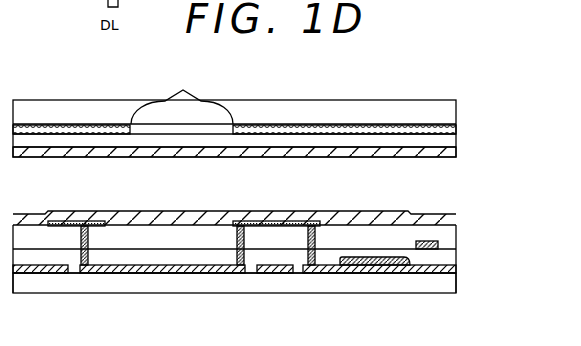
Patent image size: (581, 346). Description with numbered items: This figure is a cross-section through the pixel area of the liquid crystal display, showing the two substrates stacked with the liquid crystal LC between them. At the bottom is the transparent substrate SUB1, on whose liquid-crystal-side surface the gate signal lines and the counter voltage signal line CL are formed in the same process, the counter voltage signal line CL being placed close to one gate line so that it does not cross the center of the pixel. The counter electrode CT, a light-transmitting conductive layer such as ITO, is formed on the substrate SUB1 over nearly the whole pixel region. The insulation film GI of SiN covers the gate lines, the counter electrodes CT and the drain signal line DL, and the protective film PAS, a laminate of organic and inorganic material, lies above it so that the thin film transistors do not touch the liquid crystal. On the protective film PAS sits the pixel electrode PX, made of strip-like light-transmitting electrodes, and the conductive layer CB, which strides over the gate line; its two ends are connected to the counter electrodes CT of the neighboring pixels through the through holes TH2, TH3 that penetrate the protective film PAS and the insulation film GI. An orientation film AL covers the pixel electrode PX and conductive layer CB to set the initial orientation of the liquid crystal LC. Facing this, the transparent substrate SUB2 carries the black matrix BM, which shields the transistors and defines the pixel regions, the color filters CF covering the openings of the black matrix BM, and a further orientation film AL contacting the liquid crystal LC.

The transparent substrate SUB2 is at (457, 108).
The color filter CF is at (452, 141).
The black matrix BM is at (183, 90).
The orientation film AL is at (450, 152).
The liquid crystal LC is at (447, 203).
The protective film PAS is at (450, 237).
The insulation film GI is at (447, 262).
The transparent substrate SUB1 is at (447, 283).
The pixel electrode PX is at (150, 213).
The conductive layer CB is at (50, 211).
The third through hole TH3 is at (90, 238).
The second through hole TH2 is at (235, 236).
The drain signal line DL is at (430, 240).
The counter electrode CT is at (133, 275).
The counter voltage signal line CL is at (415, 275).